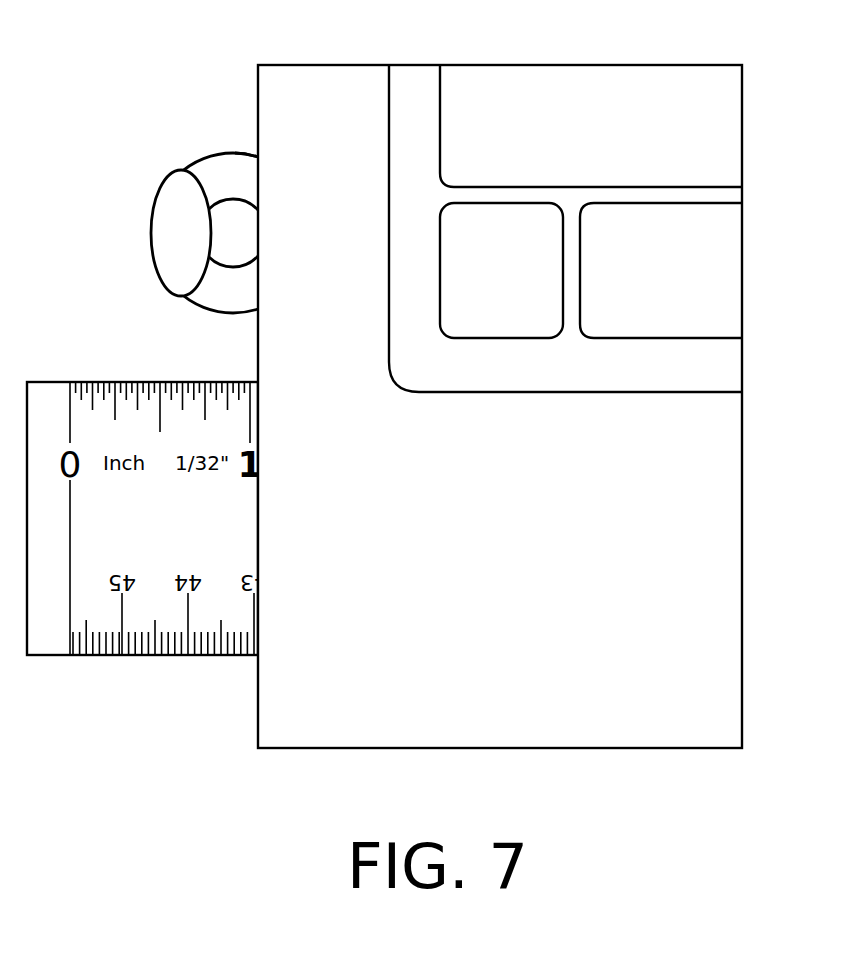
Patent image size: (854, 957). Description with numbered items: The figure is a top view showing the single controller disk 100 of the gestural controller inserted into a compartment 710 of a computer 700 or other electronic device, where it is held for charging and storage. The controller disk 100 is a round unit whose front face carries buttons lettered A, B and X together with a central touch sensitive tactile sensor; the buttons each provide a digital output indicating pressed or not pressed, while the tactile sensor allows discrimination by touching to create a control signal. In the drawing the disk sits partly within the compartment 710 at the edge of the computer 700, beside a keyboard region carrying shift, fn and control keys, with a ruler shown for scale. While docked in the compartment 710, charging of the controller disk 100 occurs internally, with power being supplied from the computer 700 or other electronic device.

The controller disk 100 is at (179, 186).
The computer 700 is at (320, 64).
The compartment 710 is at (252, 148).